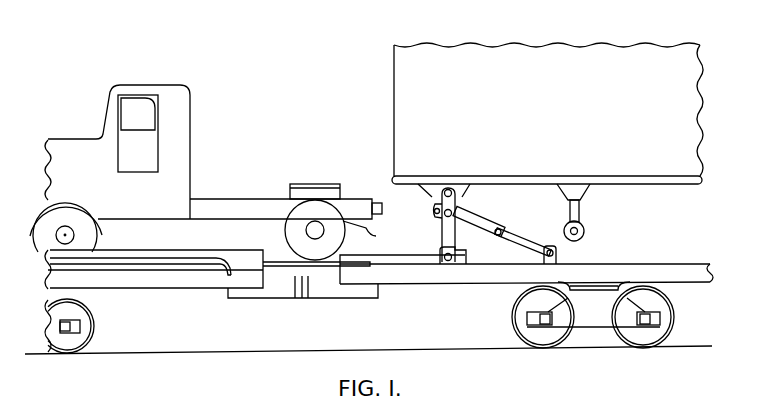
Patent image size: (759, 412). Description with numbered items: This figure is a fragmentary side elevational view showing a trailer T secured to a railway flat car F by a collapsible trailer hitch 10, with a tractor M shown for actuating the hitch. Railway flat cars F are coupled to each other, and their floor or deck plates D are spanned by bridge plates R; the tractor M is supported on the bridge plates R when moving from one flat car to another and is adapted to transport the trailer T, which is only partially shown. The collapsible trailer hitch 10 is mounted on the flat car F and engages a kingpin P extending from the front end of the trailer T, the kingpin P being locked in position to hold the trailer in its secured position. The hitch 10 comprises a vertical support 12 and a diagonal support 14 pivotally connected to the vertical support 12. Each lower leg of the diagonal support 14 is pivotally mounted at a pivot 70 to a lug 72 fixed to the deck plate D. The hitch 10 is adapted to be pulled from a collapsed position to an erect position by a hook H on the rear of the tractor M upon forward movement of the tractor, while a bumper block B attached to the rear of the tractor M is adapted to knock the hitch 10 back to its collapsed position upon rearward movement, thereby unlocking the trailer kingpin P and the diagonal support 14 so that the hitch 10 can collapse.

The tractor M is at (188, 143).
The trailer T is at (408, 97).
The bumper block B is at (383, 209).
The hook H is at (367, 234).
The kingpin P is at (448, 185).
The collapsible trailer hitch 10 is at (437, 232).
The vertical support 12 is at (445, 245).
The diagonal support 14 is at (473, 224).
The pivot 70 is at (553, 246).
The lug 72 is at (557, 257).
The deck plate D is at (244, 262).
The railway flat car F is at (190, 278).
The bridge plate R is at (290, 276).